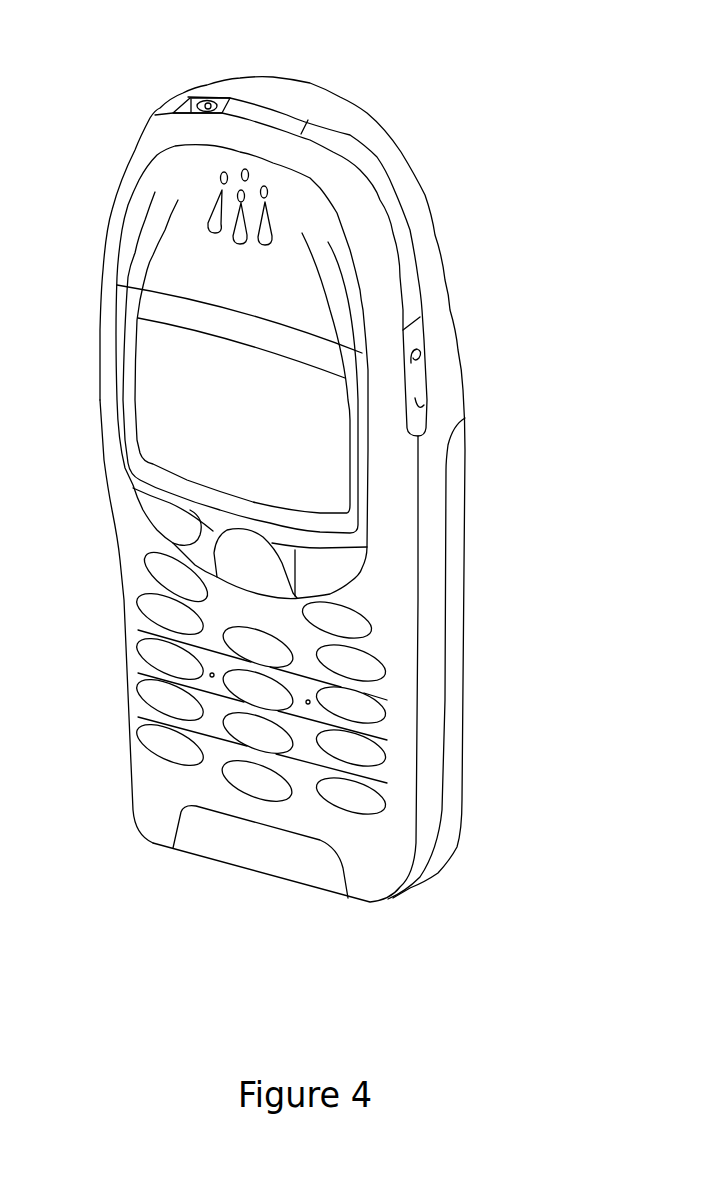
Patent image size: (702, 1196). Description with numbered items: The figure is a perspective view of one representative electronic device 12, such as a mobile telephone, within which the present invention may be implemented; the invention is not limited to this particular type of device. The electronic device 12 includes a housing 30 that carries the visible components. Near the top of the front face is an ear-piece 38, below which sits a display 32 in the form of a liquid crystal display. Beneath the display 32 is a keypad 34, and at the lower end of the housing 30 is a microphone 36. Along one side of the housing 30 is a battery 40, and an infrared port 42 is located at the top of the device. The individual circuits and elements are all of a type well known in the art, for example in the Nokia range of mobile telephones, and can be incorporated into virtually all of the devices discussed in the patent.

The electronic device 12 is at (399, 91).
The housing 30 is at (430, 245).
The display 32 is at (327, 460).
The keypad 34 is at (348, 800).
The microphone 36 is at (198, 840).
The ear-piece 38 is at (222, 203).
The battery 40 is at (453, 782).
The infrared port 42 is at (263, 113).